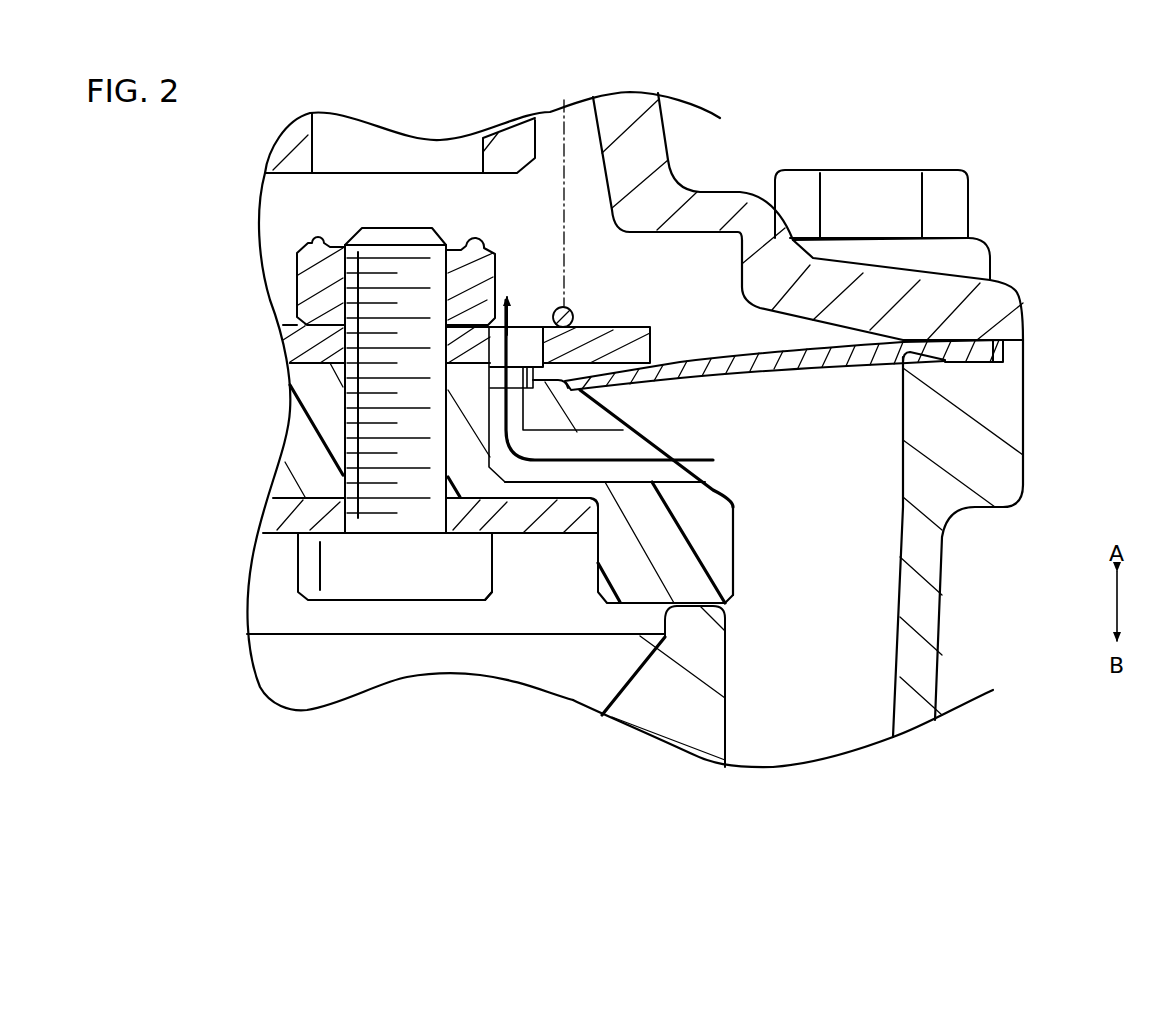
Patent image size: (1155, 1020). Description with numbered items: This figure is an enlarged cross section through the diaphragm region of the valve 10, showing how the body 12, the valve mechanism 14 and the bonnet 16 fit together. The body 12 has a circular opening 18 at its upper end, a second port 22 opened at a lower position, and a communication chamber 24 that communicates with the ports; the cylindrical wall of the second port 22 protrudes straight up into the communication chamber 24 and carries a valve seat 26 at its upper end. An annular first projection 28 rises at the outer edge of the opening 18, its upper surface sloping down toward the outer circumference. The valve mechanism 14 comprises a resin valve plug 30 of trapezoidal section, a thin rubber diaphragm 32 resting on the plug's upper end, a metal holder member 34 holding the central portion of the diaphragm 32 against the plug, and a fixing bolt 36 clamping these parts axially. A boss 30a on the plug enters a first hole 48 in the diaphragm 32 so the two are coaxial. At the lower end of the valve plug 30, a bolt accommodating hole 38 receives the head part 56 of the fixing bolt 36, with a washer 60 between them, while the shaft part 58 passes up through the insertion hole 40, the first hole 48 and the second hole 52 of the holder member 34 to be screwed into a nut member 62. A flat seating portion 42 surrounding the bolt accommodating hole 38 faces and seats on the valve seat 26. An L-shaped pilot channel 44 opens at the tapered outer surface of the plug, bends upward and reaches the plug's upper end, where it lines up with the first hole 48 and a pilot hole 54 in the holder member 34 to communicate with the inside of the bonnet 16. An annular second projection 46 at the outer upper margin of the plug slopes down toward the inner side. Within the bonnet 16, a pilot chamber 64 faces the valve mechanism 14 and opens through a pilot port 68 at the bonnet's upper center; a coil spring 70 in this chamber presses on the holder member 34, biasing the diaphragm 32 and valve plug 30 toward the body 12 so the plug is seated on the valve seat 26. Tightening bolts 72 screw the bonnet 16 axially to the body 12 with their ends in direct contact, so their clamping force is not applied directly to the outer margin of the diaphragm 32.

The valve 10 is at (134, 181).
The body 12 is at (947, 617).
The valve mechanism 14 is at (742, 542).
The bonnet 16 is at (683, 152).
The opening 18 is at (903, 383).
The second port 22 is at (402, 667).
The communication chamber 24 is at (820, 737).
The valve seat 26 is at (698, 625).
The first projection 28 is at (917, 345).
The valve plug 30 is at (720, 568).
The boss 30a is at (302, 377).
The diaphragm 32 is at (777, 358).
The holder member 34 is at (300, 347).
The fixing bolt 36 is at (489, 603).
The bolt accommodating hole 38 is at (598, 557).
The insertion hole 40 is at (345, 432).
The seating portion 42 is at (640, 608).
The pilot channel 44 is at (627, 447).
The second projection 46 is at (592, 398).
The first hole 48 is at (520, 378).
The second hole 52 is at (365, 322).
The pilot hole 54 is at (527, 337).
The head part 56 is at (357, 590).
The shaft part 58 is at (388, 235).
The washer 60 is at (530, 537).
The nut member 62 is at (317, 253).
The pilot chamber 64 is at (280, 238).
The pilot port 68 is at (395, 157).
The spring 70 is at (587, 315).
The tightening bolts 72 is at (867, 188).